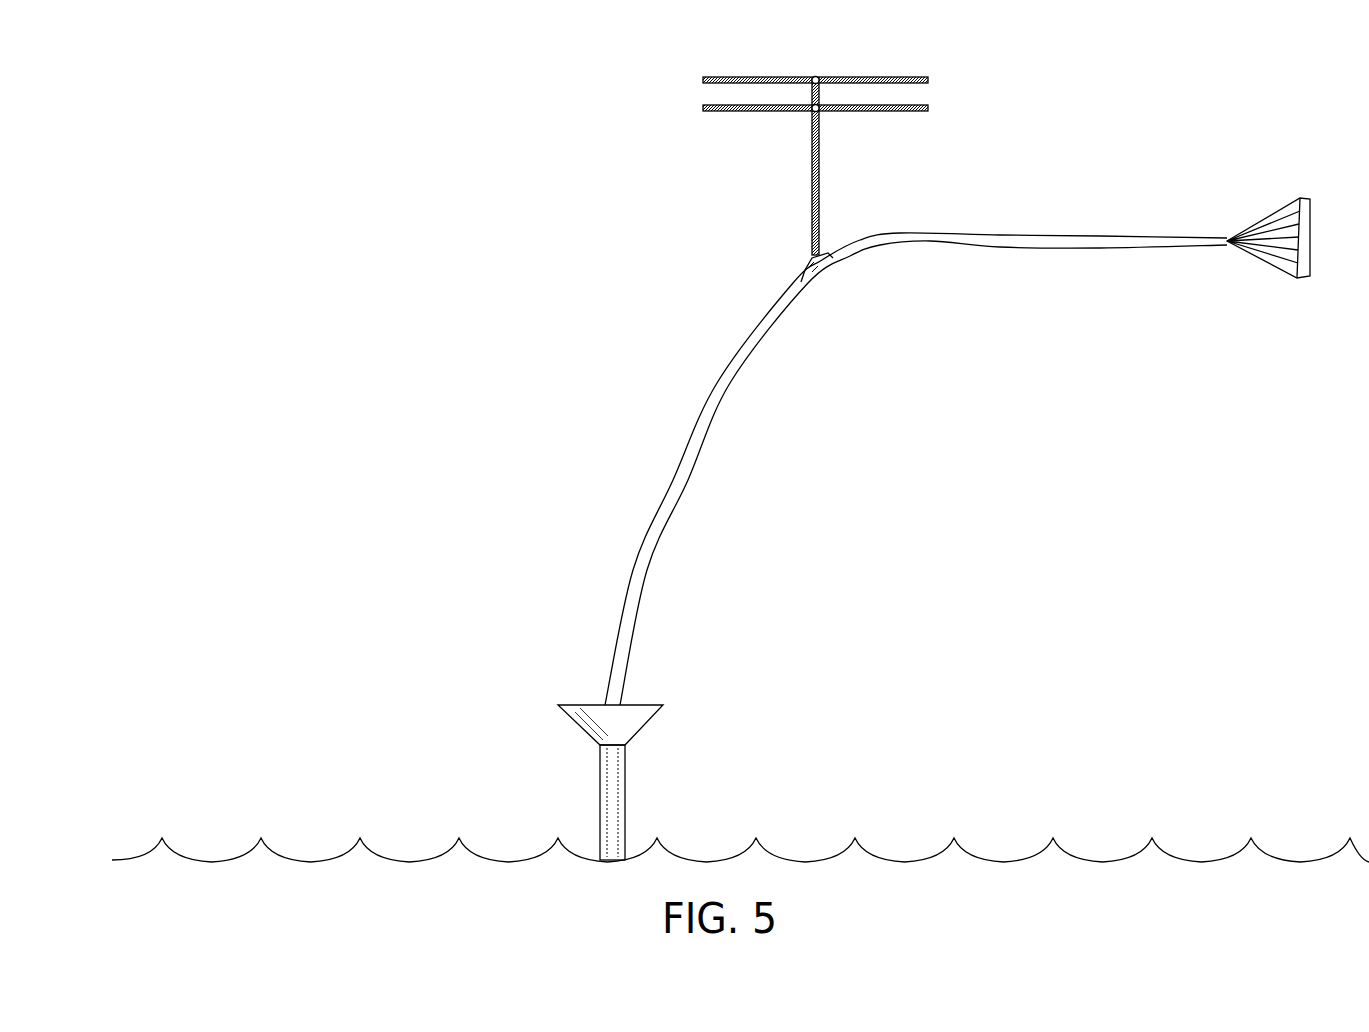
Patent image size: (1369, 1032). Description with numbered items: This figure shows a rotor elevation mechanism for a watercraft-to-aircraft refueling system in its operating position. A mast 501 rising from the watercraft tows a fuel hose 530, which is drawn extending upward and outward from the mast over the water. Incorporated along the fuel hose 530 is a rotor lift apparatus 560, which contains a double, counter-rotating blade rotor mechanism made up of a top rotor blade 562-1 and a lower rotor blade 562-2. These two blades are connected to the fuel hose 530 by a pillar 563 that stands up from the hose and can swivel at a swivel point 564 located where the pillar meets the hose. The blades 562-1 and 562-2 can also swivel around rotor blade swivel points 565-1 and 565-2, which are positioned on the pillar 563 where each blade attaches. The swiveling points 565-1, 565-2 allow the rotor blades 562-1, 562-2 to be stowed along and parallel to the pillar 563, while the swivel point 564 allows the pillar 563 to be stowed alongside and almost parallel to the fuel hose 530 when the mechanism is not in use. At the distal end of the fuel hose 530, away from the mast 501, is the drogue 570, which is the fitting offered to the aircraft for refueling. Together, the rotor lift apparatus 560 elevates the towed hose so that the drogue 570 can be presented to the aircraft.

The mast 501 is at (578, 705).
The fuel hose 530 is at (688, 478).
The rotor lift apparatus 560 is at (680, 191).
The top rotor blade 562-1 is at (713, 78).
The lower rotor blade 562-2 is at (703, 105).
The pillar 563 is at (811, 190).
The swivel point 564 is at (830, 252).
The rotor blade swivel point 565-1 is at (816, 77).
The rotor blade swivel point 565-2 is at (818, 112).
The drogue 570 is at (1272, 215).